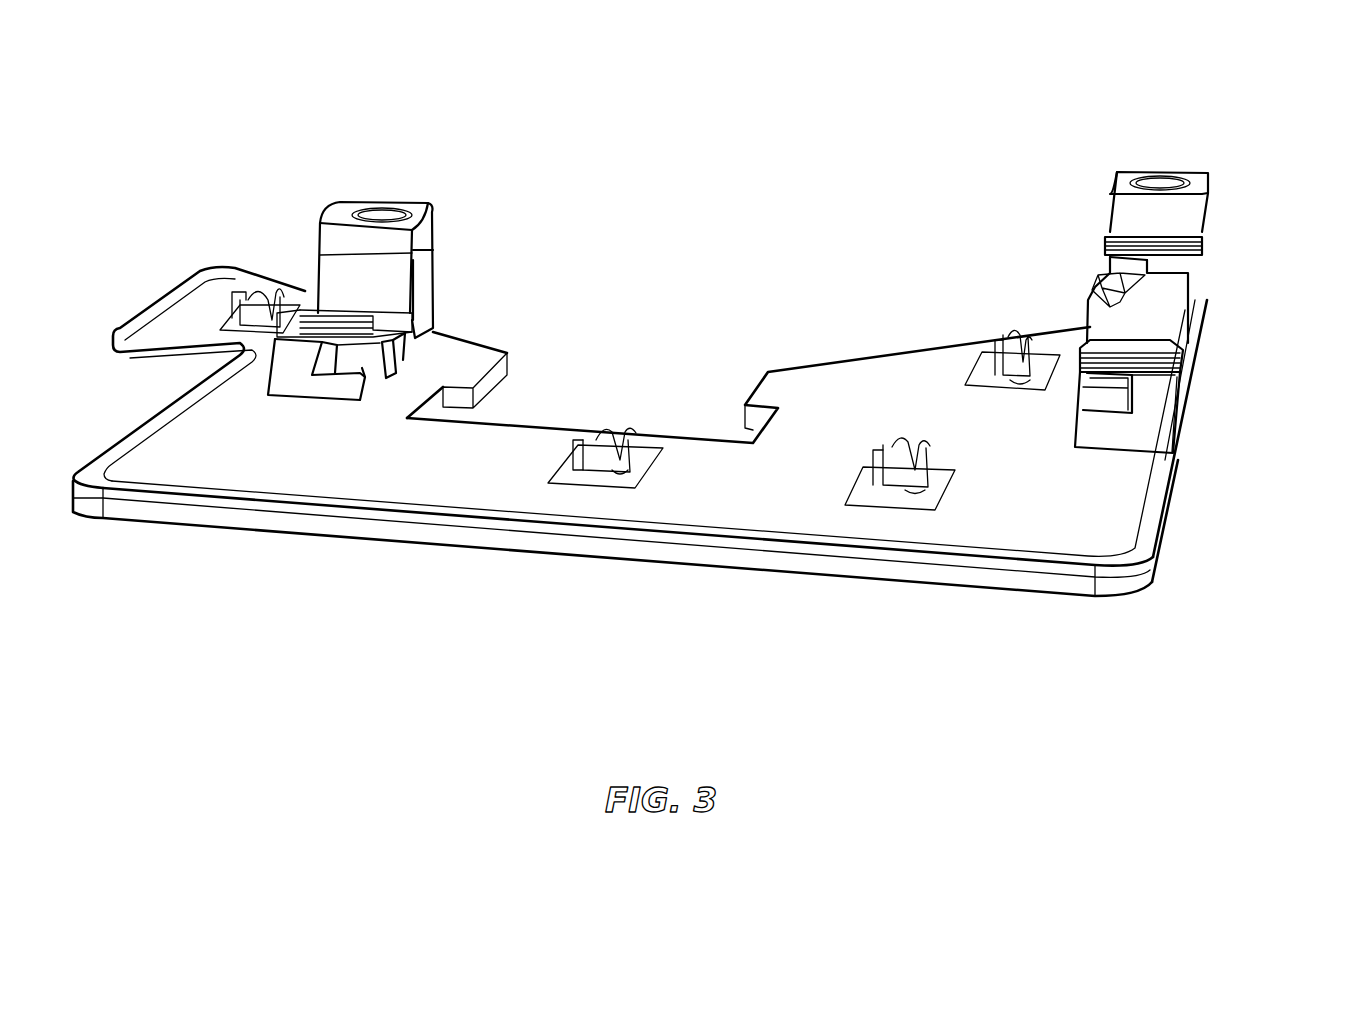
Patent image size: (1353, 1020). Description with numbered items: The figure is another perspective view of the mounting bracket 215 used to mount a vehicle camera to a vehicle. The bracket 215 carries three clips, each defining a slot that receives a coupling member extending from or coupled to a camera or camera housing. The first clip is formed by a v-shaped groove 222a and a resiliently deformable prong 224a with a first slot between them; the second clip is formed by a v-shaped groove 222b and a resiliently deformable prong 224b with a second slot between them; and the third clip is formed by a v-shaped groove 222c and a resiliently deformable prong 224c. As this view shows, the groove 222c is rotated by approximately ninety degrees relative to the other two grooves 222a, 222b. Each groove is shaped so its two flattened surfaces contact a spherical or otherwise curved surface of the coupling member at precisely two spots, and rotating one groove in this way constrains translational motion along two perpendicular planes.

The mounting bracket 215 is at (640, 431).
The v-shaped groove 222a is at (1077, 402).
The v-shaped groove 222b is at (397, 366).
The v-shaped groove 222c is at (1107, 302).
The resiliently deformable prong 224a is at (1145, 345).
The resiliently deformable prong 224b is at (330, 306).
The resiliently deformable prong 224c is at (1163, 250).